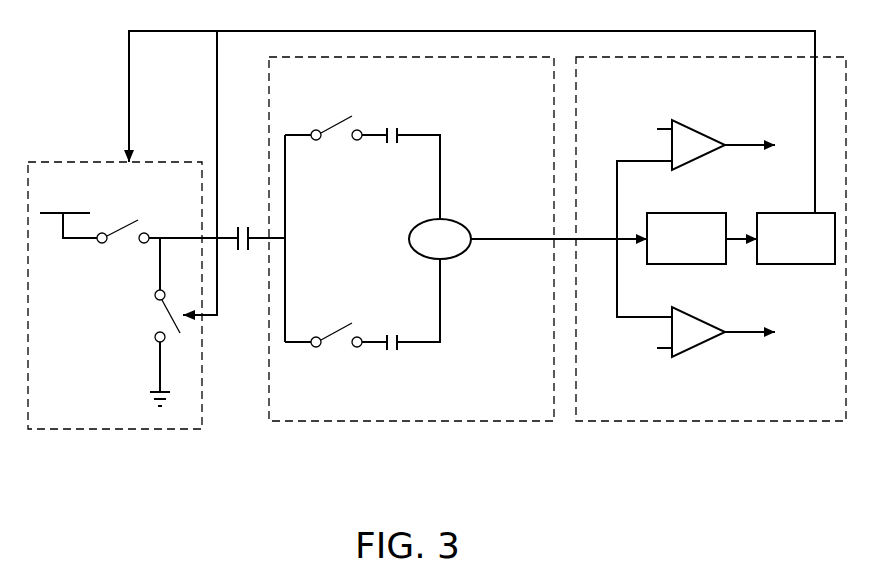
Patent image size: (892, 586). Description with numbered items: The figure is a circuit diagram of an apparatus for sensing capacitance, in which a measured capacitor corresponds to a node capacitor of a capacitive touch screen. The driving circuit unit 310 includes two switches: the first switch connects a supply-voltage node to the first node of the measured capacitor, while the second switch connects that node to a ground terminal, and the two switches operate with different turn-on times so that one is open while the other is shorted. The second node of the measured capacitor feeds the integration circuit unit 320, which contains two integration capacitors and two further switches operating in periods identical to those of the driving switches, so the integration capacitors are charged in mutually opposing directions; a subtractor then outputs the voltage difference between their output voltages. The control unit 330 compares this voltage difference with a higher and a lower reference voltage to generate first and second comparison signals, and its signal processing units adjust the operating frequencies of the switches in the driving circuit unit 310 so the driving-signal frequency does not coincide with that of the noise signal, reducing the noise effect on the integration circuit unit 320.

The driving circuit unit 310 is at (112, 430).
The integration circuit unit 320 is at (413, 421).
The control unit 330 is at (712, 421).